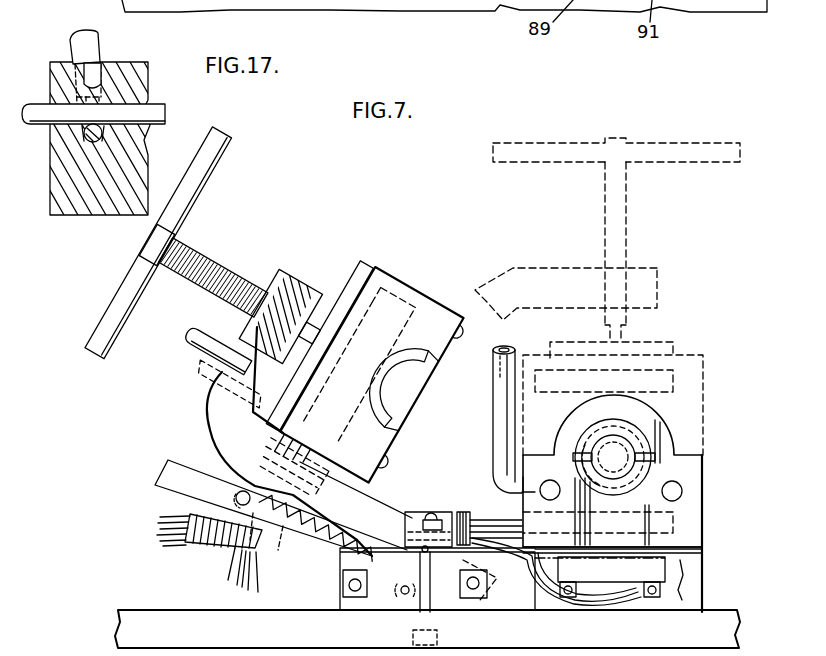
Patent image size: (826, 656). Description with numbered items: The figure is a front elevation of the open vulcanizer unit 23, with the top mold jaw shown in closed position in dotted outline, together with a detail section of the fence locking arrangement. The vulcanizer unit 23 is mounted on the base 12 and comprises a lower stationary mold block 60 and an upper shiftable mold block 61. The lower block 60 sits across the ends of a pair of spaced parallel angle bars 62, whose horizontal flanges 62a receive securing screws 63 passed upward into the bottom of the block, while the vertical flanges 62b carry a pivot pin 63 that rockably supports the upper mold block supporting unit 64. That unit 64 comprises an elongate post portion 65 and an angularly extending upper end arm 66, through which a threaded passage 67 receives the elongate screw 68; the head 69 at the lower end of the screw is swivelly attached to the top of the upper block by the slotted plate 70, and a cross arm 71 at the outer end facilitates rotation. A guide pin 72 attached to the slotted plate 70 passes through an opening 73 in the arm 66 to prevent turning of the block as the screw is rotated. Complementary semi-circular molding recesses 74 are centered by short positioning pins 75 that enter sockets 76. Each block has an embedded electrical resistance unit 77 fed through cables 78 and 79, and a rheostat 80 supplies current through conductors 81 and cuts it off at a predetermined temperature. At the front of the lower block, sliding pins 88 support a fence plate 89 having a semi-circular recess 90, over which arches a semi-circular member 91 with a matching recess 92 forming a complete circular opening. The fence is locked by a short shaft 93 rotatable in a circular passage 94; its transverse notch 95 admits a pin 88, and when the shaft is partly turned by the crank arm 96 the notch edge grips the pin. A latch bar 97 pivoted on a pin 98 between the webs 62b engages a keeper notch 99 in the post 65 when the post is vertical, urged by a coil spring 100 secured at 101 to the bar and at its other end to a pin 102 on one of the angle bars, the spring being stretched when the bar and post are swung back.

In FIG. 7, the base 12 is at (723, 630).
In FIG. 7, the vulcanizer unit 23 is at (716, 468).
In FIG. 17, the lower stationary mold block 60 is at (67, 163).
In FIG. 7, the lower stationary mold block 60 is at (703, 542).
In FIG. 7, the upper shiftable mold block 61 is at (407, 303).
In FIG. 7, the angle bars 62 is at (693, 602).
In FIG. 7, the horizontal flanges 62a is at (700, 553).
In FIG. 7, the vertical flanges 62b is at (338, 603).
In FIG. 7, the securing screws / pivot pin 63 is at (473, 593).
In FIG. 7, the upper mold block supporting unit 64 is at (206, 416).
In FIG. 7, the post portion 65 is at (377, 520).
In FIG. 7, the upper end arm 66 is at (655, 290).
In FIG. 7, the threaded passage 67 is at (272, 297).
In FIG. 7, the screw 68 is at (627, 225).
In FIG. 7, the head 69 is at (290, 348).
In FIG. 7, the slotted plate 70 is at (677, 343).
In FIG. 7, the cross arm 71 is at (675, 152).
In FIG. 7, the guide pin 72 is at (200, 342).
In FIG. 7, the opening 73 is at (230, 378).
In FIG. 7, the molding recesses 74 is at (602, 468).
In FIG. 7, the positioning pins 75 is at (460, 345).
In FIG. 17, the sockets 76 is at (97, 72).
In FIG. 7, the electrical resistance unit 77 is at (670, 385).
In FIG. 7, the cable 78 is at (467, 518).
In FIG. 7, the cable 79 is at (233, 560).
In FIG. 7, the rheostat 80 is at (590, 575).
In FIG. 7, the conductors 81 is at (600, 602).
In FIG. 17, the pins 88 is at (150, 116).
In FIG. 7, the fence plate 89 is at (688, 503).
In FIG. 7, the semi-circular recess 90 is at (595, 487).
In FIG. 7, the semi-circular member 91 is at (658, 420).
In FIG. 7, the semi-circular recess 92 is at (660, 438).
In FIG. 17, the shaft 93 is at (83, 134).
In FIG. 7, the shaft 93 is at (522, 495).
In FIG. 17, the circular passage 94 is at (102, 130).
In FIG. 17, the transverse notch 95 is at (107, 123).
In FIG. 17, the crank arm 96 is at (83, 43).
In FIG. 7, the crank arm 96 is at (503, 440).
In FIG. 7, the latch bar 97 is at (173, 482).
In FIG. 7, the pin 98 is at (356, 591).
In FIG. 7, the keeper notch 99 is at (308, 463).
In FIG. 7, the coil spring 100 is at (305, 528).
In FIG. 7, the spring attachment point 101 is at (243, 492).
In FIG. 7, the pin 102 is at (404, 595).